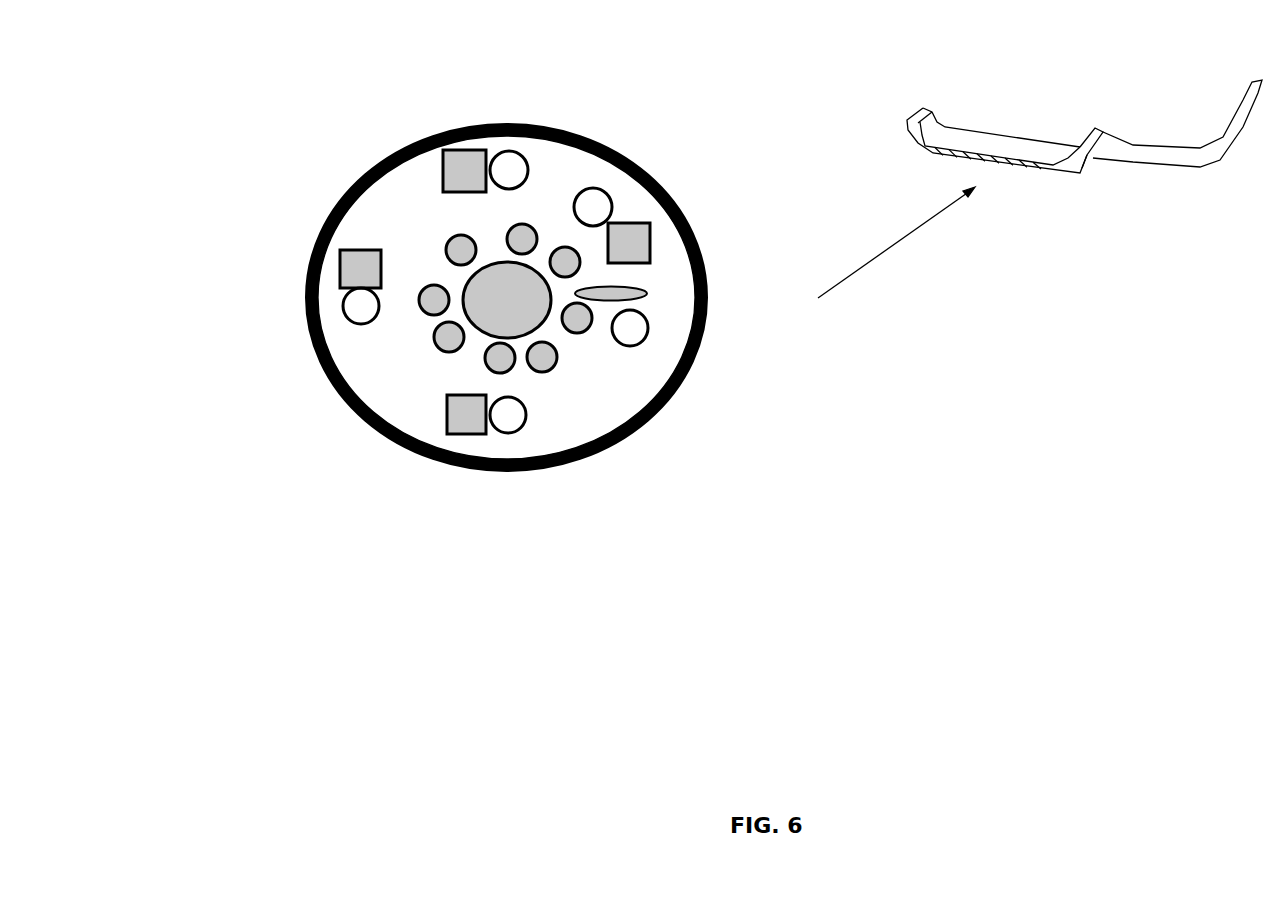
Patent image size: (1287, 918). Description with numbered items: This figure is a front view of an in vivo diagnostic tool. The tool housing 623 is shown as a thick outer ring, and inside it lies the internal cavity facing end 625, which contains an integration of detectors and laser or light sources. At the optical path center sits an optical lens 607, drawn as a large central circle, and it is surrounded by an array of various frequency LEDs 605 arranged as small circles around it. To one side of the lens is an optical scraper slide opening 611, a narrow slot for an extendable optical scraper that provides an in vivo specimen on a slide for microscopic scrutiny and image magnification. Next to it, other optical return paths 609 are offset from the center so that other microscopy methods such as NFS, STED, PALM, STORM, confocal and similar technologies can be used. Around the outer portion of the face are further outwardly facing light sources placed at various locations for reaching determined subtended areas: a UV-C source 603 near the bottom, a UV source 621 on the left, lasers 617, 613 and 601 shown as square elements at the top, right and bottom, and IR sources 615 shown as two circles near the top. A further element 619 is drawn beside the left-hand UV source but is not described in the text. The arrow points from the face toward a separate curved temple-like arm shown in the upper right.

The laser 601 is at (404, 459).
The UV-C LED 603 is at (479, 475).
The array of various frequency LEDs 605 is at (533, 388).
The optical lens 607 is at (597, 384).
The other optical return paths 609 is at (714, 368).
The optical scraper slide opening 611 is at (681, 308).
The laser 613 is at (693, 212).
The IR LED 615 is at (551, 148).
The laser 617 is at (426, 143).
The light emitter 619 is at (304, 245).
The UV LED 621 is at (277, 303).
The tool housing 623 is at (396, 298).
The internal cavity facing end 625 is at (427, 297).